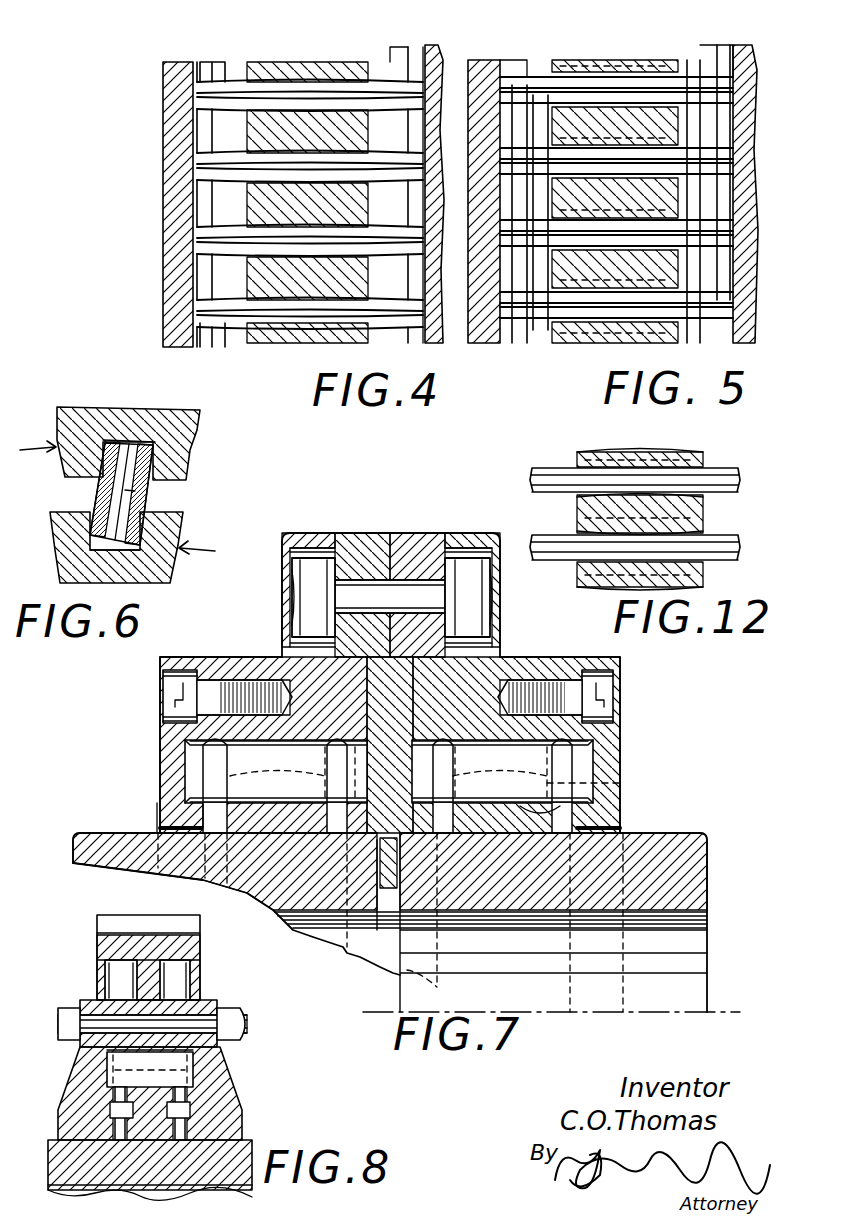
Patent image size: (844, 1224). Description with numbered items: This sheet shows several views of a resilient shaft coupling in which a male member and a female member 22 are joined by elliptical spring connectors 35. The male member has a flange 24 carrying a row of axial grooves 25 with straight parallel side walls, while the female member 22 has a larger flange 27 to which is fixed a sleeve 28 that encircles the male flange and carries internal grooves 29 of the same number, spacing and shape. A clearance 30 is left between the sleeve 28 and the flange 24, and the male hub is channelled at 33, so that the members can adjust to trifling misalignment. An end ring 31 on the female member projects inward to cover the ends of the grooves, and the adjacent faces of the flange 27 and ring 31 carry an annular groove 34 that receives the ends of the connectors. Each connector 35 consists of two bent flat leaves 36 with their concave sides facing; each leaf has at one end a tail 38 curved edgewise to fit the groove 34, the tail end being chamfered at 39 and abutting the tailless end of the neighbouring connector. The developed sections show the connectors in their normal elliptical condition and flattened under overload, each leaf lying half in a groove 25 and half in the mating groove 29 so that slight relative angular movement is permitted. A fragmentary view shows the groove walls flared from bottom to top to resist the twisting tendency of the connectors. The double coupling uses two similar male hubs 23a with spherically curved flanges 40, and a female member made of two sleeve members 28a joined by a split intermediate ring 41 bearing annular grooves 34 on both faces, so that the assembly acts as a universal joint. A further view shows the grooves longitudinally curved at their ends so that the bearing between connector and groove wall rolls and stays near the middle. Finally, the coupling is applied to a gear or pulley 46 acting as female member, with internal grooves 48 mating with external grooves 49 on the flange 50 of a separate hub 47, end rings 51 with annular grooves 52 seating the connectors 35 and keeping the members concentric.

In FIG. 7, the female member 22 is at (390, 659).
In FIG. 7, the male member hub 23a is at (718, 841).
In FIG. 6, the flange 24 is at (176, 569).
In FIG. 5, the grooves 25 is at (606, 305).
In FIG. 6, the grooves 25 is at (80, 551).
In FIG. 12, the grooves 25 is at (700, 496).
In FIG. 7, the grooves 25 is at (522, 810).
In FIG. 4, the flange 27 is at (433, 57).
In FIG. 5, the flange 27 is at (745, 53).
In FIG. 6, the sleeve 28 is at (196, 448).
In FIG. 7, the sleeve members 28a is at (528, 641).
In FIG. 4, the internal grooves 29 is at (251, 73).
In FIG. 5, the internal grooves 29 is at (566, 322).
In FIG. 6, the internal grooves 29 is at (140, 440).
In FIG. 12, the internal grooves 29 is at (700, 520).
In FIG. 7, the internal grooves 29 is at (597, 741).
In FIG. 6, the clearance 30 is at (180, 497).
In FIG. 4, the end ring 31 is at (166, 82).
In FIG. 5, the end ring 31 is at (486, 59).
In FIG. 7, the end ring 31 is at (158, 739).
In FIG. 7, the circumferential channel 33 is at (157, 832).
In FIG. 4, the annular groove 34 is at (216, 126).
In FIG. 5, the annular groove 34 is at (712, 127).
In FIG. 7, the annular groove 34 is at (300, 771).
In FIG. 4, the spring connector 35 is at (236, 348).
In FIG. 5, the spring connector 35 is at (690, 343).
In FIG. 6, the spring connector 35 is at (92, 492).
In FIG. 12, the spring connector 35 is at (534, 477).
In FIG. 7, the spring connector 35 is at (212, 753).
In FIG. 8, the spring connector 35 is at (184, 1073).
In FIG. 4, the bent leaves 36 is at (226, 168).
In FIG. 5, the bent leaves 36 is at (692, 236).
In FIG. 4, the tail 38 is at (200, 207).
In FIG. 7, the tail 38 is at (192, 792).
In FIG. 4, the chamfer 39 is at (200, 222).
In FIG. 7, the spherically curved flange 40 is at (621, 783).
In FIG. 7, the intermediate ring member 41 is at (389, 550).
In FIG. 8, the gear or pulley 46 is at (201, 951).
In FIG. 8, the hub 47 is at (58, 1168).
In FIG. 8, the internal grooves 48 is at (214, 1048).
In FIG. 8, the external grooves 49 is at (182, 1092).
In FIG. 8, the flange 50 is at (112, 1094).
In FIG. 8, the end rings 51 is at (186, 1047).
In FIG. 8, the annular grooves 52 is at (100, 1066).